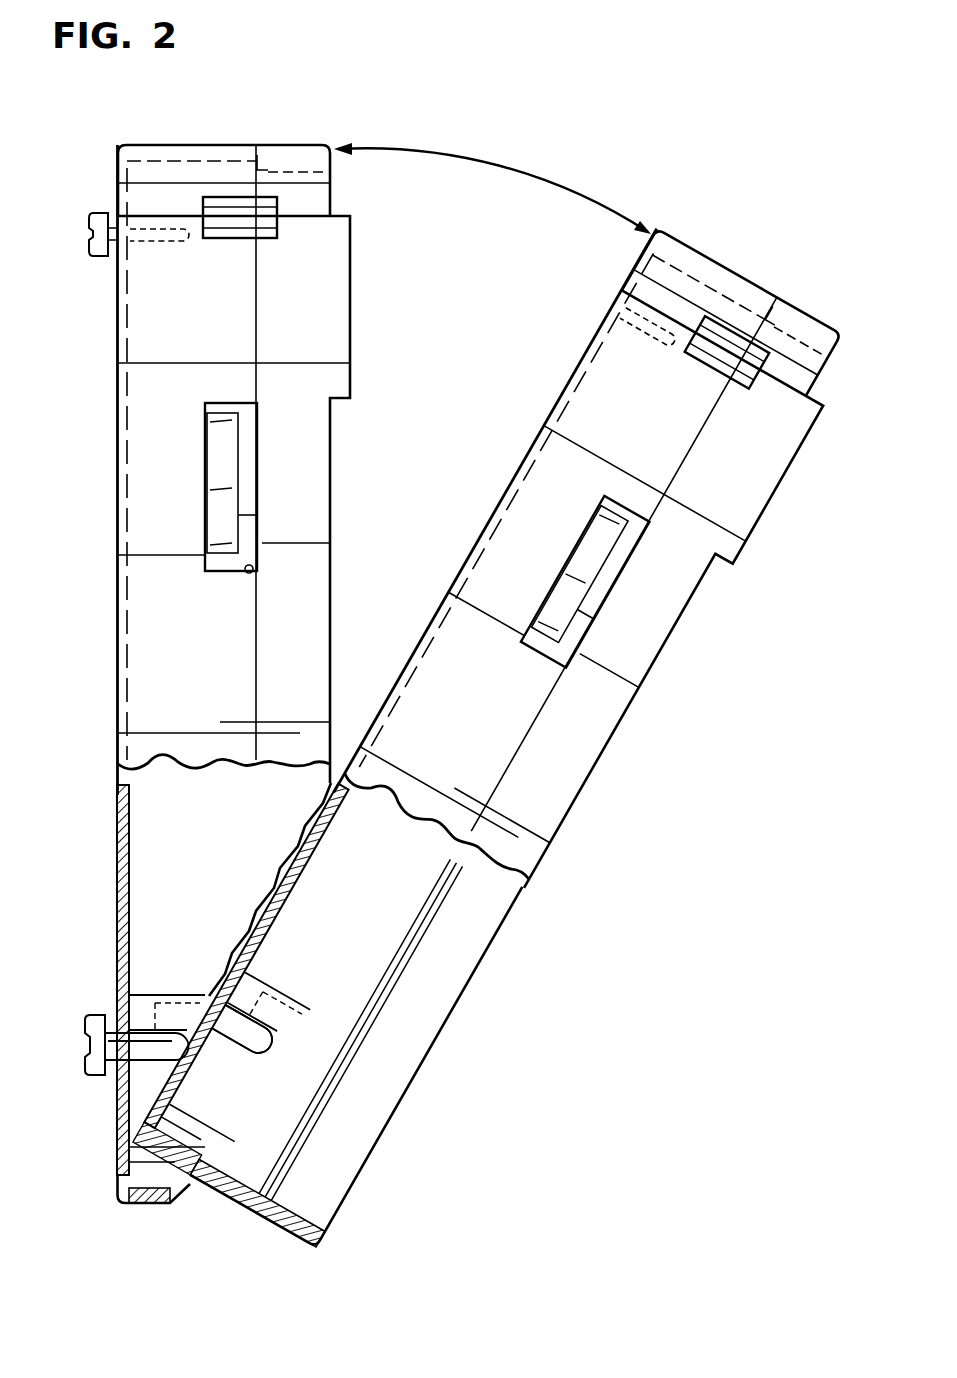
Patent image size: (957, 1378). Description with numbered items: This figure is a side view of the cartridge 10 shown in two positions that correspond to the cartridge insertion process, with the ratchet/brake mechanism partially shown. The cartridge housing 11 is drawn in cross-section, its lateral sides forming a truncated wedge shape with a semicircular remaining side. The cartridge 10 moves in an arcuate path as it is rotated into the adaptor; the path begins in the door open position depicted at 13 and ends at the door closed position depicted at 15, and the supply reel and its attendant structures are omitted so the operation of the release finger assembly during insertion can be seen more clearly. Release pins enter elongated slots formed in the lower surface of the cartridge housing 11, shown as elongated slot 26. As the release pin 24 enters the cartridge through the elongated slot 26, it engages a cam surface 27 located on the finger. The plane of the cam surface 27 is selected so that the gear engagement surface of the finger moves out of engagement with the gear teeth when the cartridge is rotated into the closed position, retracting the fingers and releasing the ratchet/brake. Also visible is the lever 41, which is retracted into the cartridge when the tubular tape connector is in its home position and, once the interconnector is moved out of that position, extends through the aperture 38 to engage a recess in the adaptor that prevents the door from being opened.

The cartridge 10 is at (700, 648).
The cartridge housing 11 is at (352, 298).
The door open position 13 is at (805, 263).
The door closed position 15 is at (345, 109).
The release pin 24 is at (180, 1060).
The elongated slot 26 is at (108, 1112).
The cam surface 27 is at (265, 1045).
The aperture 38 is at (250, 574).
The lever 41 is at (222, 463).